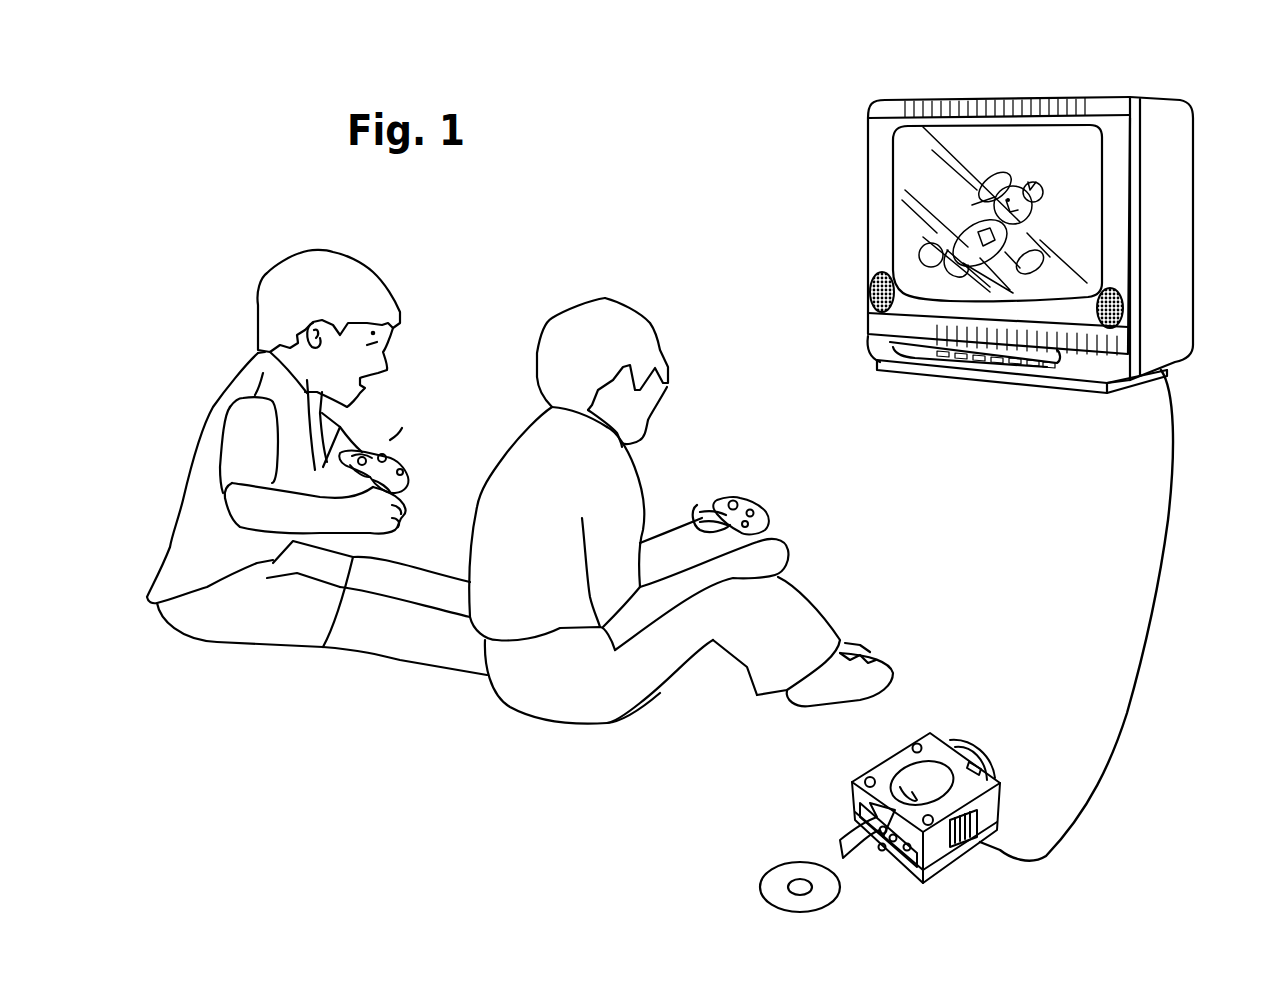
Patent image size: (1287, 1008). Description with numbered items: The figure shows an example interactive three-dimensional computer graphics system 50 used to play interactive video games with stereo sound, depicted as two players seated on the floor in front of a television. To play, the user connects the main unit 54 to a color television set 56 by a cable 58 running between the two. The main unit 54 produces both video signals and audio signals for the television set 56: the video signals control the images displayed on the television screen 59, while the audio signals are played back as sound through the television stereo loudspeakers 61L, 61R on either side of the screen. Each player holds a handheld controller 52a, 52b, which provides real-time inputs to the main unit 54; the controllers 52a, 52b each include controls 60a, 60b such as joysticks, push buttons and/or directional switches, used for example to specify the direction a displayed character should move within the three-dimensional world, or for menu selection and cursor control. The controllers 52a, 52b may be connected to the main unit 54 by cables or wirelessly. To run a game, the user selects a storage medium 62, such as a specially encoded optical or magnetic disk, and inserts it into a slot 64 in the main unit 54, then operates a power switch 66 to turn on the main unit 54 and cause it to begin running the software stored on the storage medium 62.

The interactive 3D computer graphics system 50 is at (1170, 812).
The handheld controller 52a is at (422, 429).
The handheld controller 52b is at (775, 479).
The main unit 54 is at (990, 796).
The color television set 56 is at (1100, 93).
The cable 58 is at (1157, 570).
The television screen 59 is at (987, 147).
The control 60a is at (387, 452).
The control 60b is at (734, 500).
The television stereo loudspeaker 61L is at (862, 297).
The television stereo loudspeaker 61R is at (1127, 330).
The storage medium 62 is at (783, 897).
The slot 64 is at (898, 803).
The power switch 66 is at (917, 745).